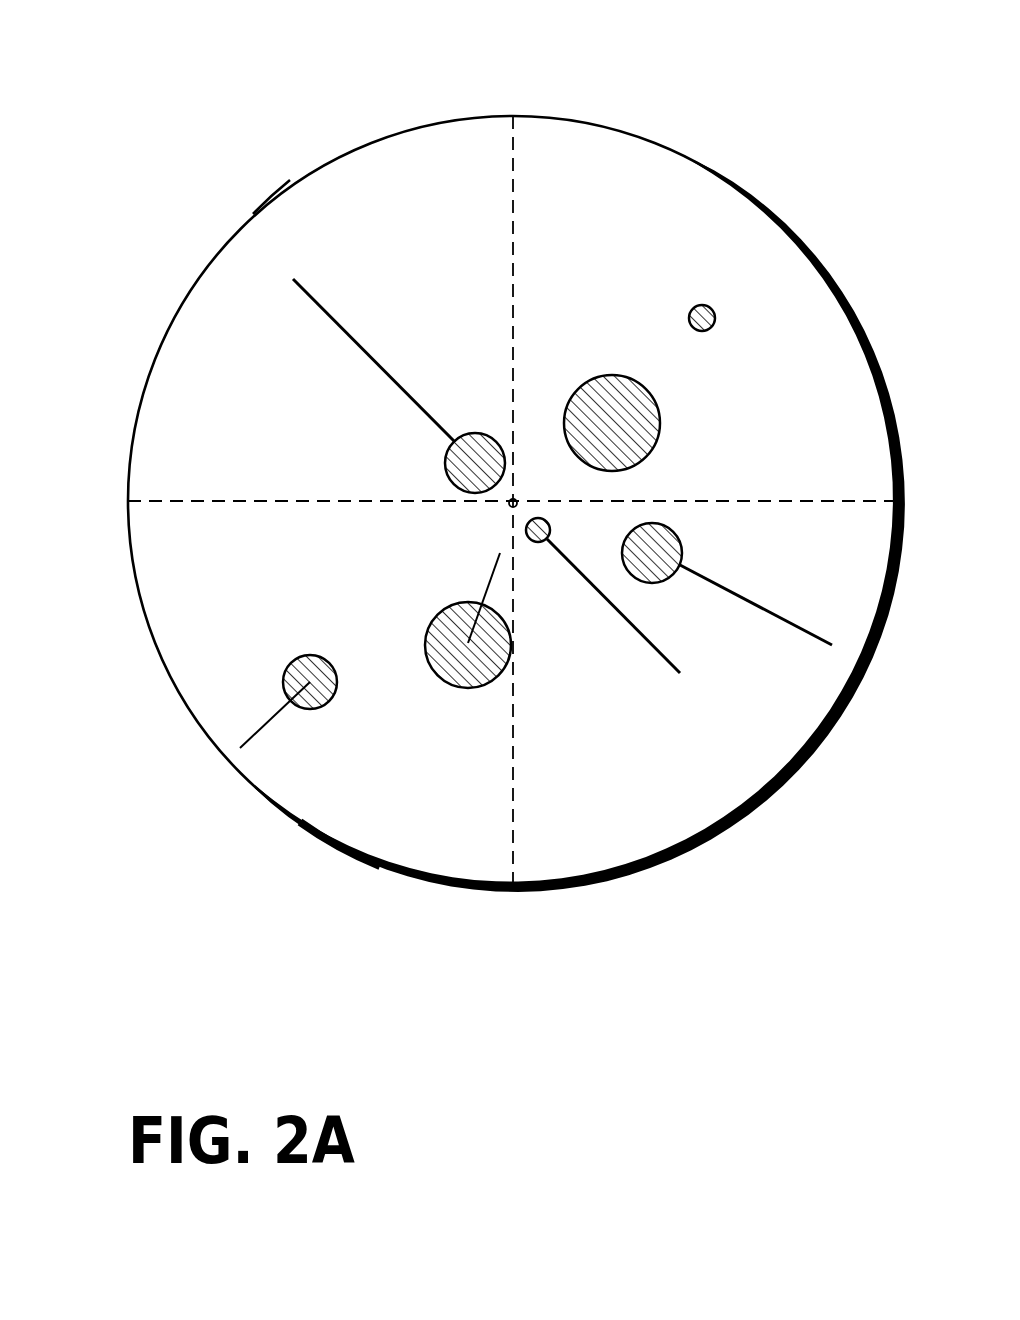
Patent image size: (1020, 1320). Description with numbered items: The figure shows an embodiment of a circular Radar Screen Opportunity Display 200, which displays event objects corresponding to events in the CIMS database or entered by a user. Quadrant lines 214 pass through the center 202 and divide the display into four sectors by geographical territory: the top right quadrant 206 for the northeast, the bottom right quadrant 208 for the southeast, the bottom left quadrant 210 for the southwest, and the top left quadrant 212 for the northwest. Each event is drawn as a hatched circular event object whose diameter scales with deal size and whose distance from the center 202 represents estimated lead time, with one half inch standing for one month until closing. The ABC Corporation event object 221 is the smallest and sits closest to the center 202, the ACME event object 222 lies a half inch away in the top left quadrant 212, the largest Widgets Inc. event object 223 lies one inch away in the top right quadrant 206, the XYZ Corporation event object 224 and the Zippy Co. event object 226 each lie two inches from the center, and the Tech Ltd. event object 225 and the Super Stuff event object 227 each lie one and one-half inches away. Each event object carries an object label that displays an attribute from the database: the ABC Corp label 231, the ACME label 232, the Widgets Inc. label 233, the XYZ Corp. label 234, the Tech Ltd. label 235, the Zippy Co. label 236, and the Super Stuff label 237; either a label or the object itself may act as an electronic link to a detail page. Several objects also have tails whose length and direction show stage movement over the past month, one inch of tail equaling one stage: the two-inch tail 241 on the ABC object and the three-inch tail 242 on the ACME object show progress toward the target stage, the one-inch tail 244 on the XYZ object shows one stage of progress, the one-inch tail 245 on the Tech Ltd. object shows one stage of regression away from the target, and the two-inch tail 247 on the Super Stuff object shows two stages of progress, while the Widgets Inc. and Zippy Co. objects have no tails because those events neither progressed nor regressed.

The Radar Screen Opportunity Display 200 is at (717, 102).
The center 202 is at (517, 499).
The top right quadrant 206 is at (778, 213).
The bottom right quadrant 208 is at (755, 810).
The bottom left quadrant 210 is at (336, 842).
The top left quadrant 212 is at (255, 214).
The quadrant lines 214 is at (157, 501).
The ABC Corporation event object 221 is at (540, 543).
The ACME event object 222 is at (482, 433).
The Widgets Inc. event object 223 is at (622, 375).
The XYZ Corporation event object 224 is at (283, 672).
The Tech Ltd. event object 225 is at (425, 651).
The Zippy Co. event object 226 is at (706, 305).
The Super Stuff event object 227 is at (665, 578).
The ABC Corp object label 231 is at (407, 523).
The ACME object label 232 is at (385, 480).
The Widgets Inc. object label 233 is at (745, 490).
The XYZ Corp. object label 234 is at (235, 637).
The Tech Ltd. object label 235 is at (401, 708).
The Zippy Co. object label 236 is at (755, 352).
The Super Stuff object label 237 is at (815, 525).
The tail 241 is at (640, 630).
The tail 242 is at (321, 306).
The tail 244 is at (262, 728).
The tail 245 is at (483, 590).
The tail 247 is at (806, 627).